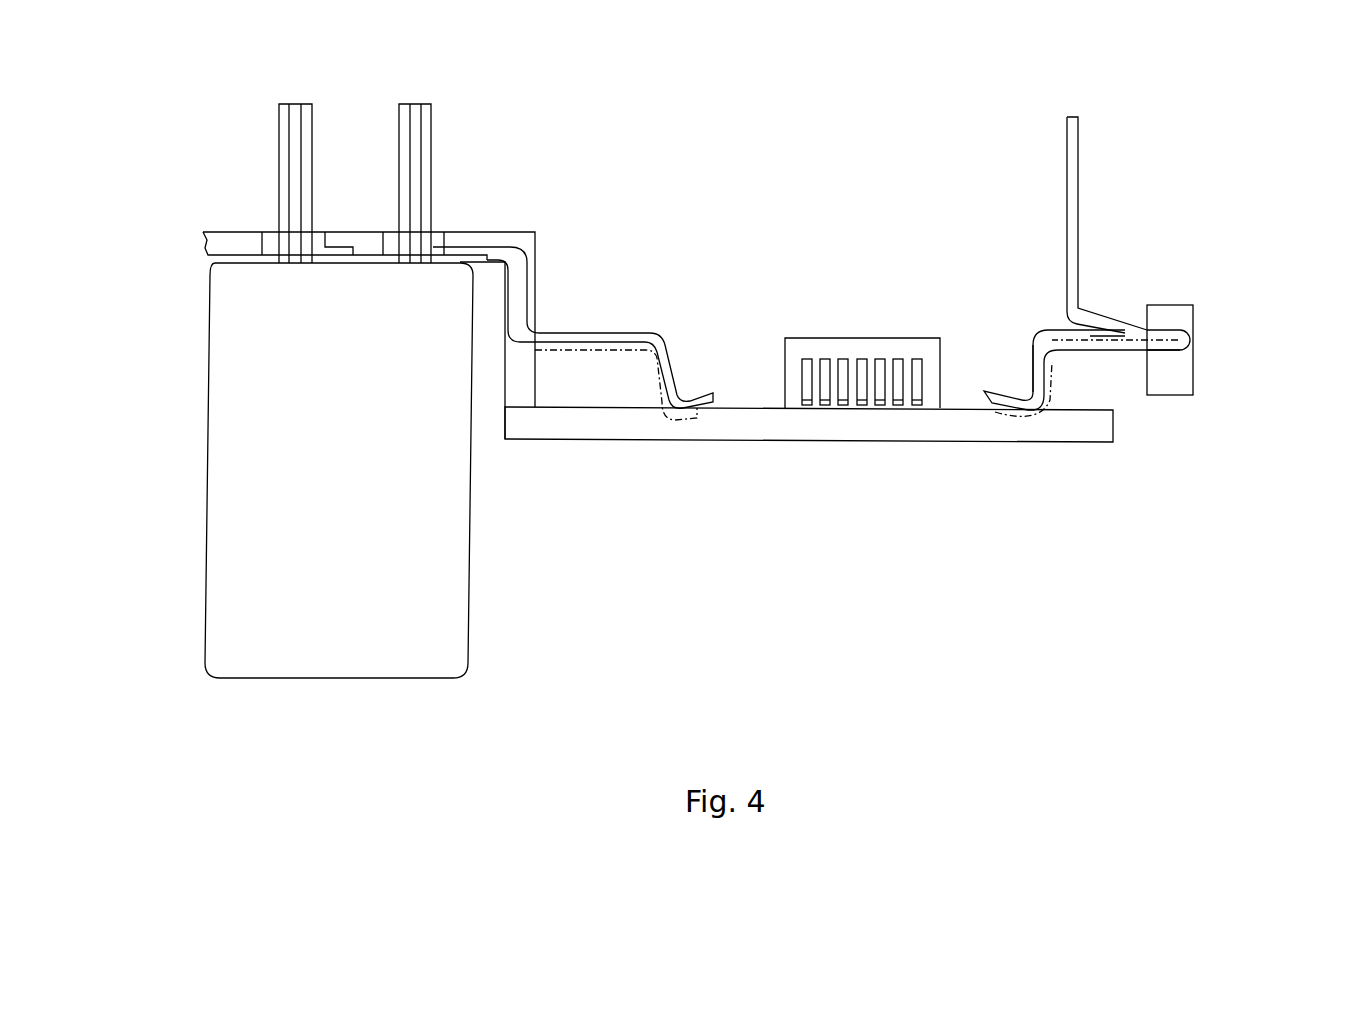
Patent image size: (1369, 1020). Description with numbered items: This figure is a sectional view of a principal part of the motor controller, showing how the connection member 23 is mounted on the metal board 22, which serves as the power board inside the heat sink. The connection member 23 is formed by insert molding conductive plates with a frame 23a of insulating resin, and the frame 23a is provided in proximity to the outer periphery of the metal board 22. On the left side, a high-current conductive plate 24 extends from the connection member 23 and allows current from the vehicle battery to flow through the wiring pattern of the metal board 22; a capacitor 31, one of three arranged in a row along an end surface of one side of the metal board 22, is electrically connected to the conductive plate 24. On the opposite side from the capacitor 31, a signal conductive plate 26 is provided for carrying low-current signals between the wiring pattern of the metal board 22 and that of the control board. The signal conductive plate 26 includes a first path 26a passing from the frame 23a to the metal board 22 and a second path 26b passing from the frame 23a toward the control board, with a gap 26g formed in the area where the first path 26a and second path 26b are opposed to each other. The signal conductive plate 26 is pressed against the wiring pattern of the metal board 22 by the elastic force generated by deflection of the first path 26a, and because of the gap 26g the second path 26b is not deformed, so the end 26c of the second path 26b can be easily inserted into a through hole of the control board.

The metal board 22 is at (752, 425).
The connection member 23 is at (535, 301).
The frame 23a is at (1182, 375).
The conductive plate 24 is at (535, 275).
The signal conductive plate 26 is at (1078, 278).
The first path 26a is at (1083, 348).
The second path 26b is at (1123, 320).
The end 26c is at (1078, 120).
The gap 26g is at (1060, 323).
The capacitor 31 is at (222, 562).